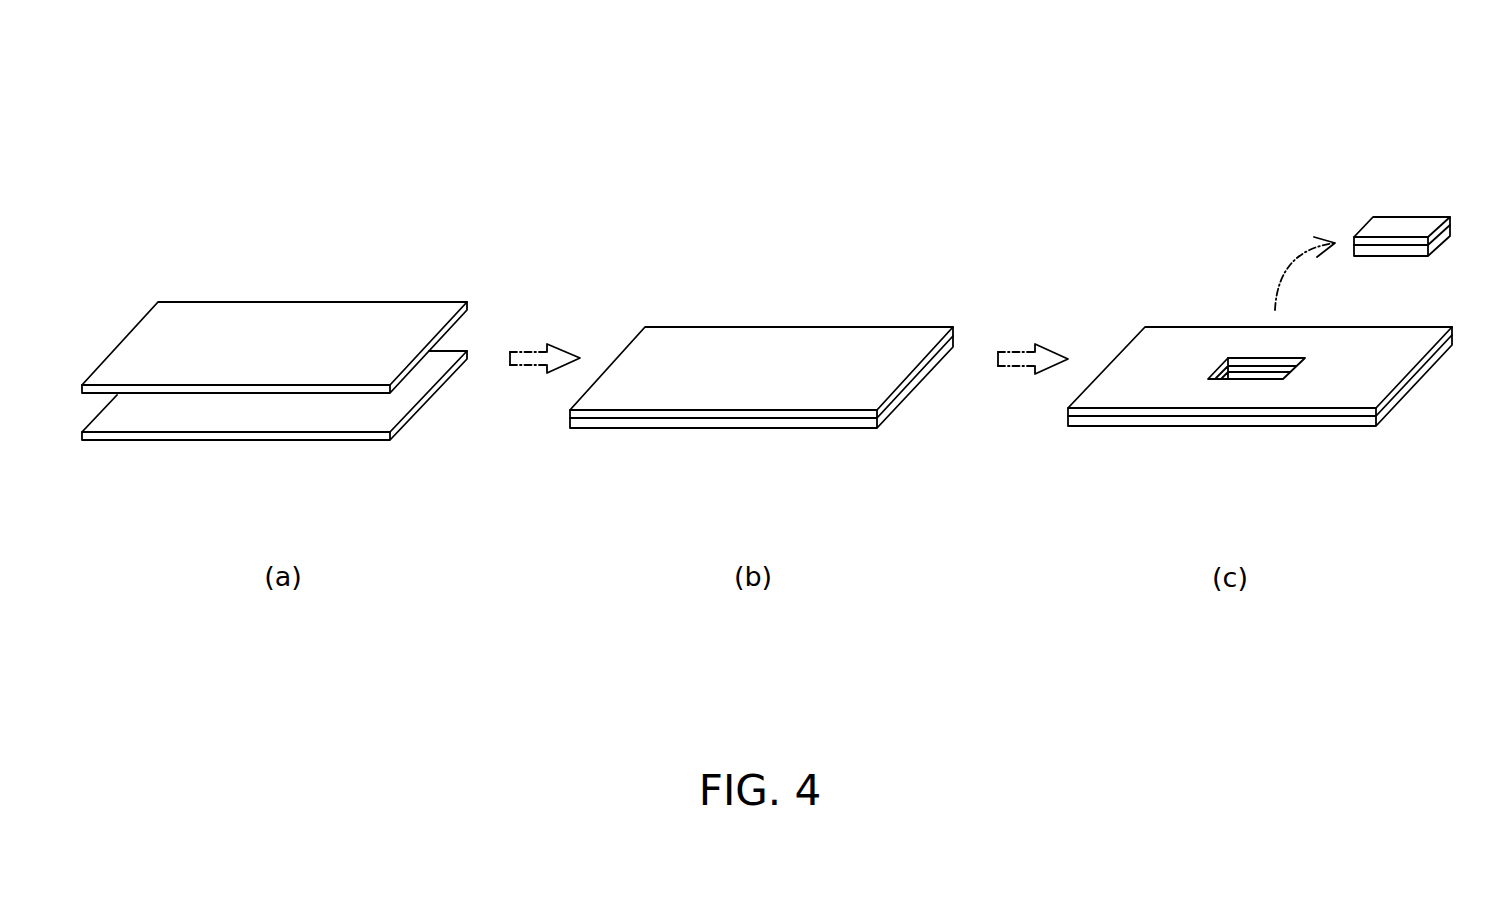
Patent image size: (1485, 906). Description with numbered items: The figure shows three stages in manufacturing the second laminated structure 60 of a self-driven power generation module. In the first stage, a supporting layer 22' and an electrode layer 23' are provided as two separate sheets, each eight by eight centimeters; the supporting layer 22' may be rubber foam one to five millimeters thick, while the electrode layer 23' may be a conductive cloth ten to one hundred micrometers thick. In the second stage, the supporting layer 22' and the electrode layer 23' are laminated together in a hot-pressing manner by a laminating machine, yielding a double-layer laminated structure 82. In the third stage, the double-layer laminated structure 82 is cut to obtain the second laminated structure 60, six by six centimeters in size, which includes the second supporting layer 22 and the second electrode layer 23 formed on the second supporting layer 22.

The electrode layer 23' is at (767, 331).
The supporting layer 22' is at (767, 421).
The double-layer laminated structure 82 is at (686, 284).
The second laminated structure 60 is at (1402, 216).
The second electrode layer 23 is at (1402, 198).
The second supporting layer 22 is at (1402, 268).